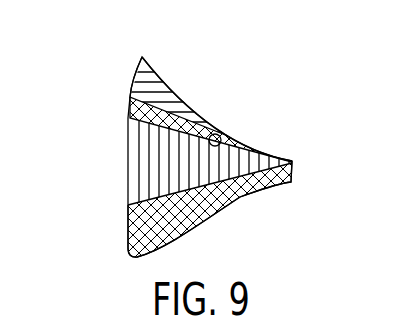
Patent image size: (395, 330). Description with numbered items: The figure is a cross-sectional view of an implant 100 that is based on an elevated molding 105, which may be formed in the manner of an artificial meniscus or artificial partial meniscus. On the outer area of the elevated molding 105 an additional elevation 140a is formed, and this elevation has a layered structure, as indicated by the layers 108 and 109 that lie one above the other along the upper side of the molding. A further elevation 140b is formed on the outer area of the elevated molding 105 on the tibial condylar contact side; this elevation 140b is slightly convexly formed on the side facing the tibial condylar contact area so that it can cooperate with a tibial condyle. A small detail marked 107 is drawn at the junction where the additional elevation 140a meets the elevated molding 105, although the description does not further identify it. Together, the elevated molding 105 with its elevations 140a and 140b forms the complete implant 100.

The implant 100 is at (286, 83).
The elevated molding 105 is at (135, 160).
The junction / interface point 107 is at (215, 134).
The layer 108 is at (141, 72).
The layer 109 is at (133, 109).
The additional elevation 140a is at (173, 80).
The elevation 140b is at (115, 236).